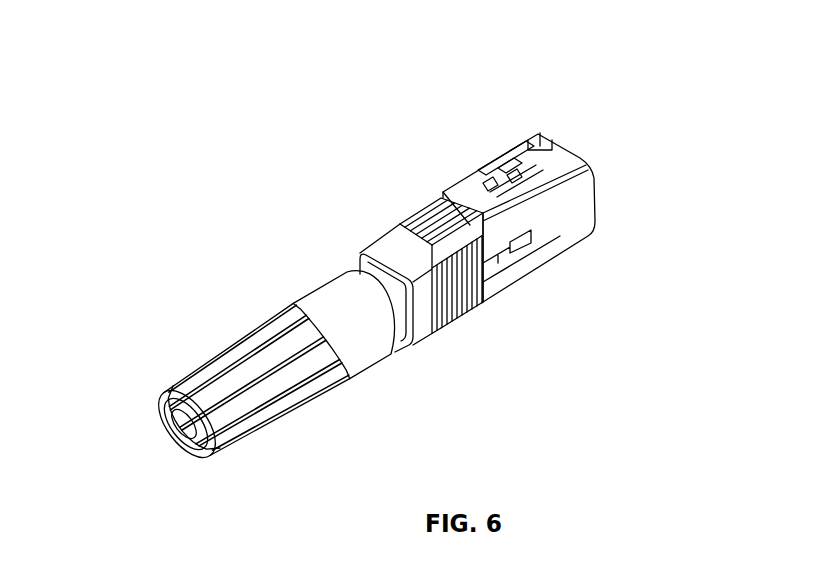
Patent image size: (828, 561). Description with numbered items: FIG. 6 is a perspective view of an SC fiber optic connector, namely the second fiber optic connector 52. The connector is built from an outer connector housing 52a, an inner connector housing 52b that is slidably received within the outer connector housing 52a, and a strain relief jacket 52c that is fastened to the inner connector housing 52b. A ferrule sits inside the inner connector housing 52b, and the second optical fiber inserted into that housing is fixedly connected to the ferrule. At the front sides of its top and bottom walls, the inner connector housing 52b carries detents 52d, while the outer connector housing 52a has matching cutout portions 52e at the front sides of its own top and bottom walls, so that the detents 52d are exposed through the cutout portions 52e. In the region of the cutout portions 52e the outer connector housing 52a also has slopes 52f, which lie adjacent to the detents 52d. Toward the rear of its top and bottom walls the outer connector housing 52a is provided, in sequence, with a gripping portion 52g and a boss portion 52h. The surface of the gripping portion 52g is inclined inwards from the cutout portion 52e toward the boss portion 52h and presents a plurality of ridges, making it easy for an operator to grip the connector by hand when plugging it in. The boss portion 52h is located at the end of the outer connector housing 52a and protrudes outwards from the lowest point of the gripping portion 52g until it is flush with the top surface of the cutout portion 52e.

The second fiber optic connector 52 is at (175, 128).
The outer connector housing 52a is at (427, 208).
The inner connector housing 52b is at (522, 243).
The strain relief jacket 52c is at (372, 347).
The detents 52d is at (537, 163).
The cutout portions 52e is at (495, 181).
The slopes 52f is at (505, 163).
The gripping portion 52g is at (412, 222).
The boss portion 52h is at (372, 243).